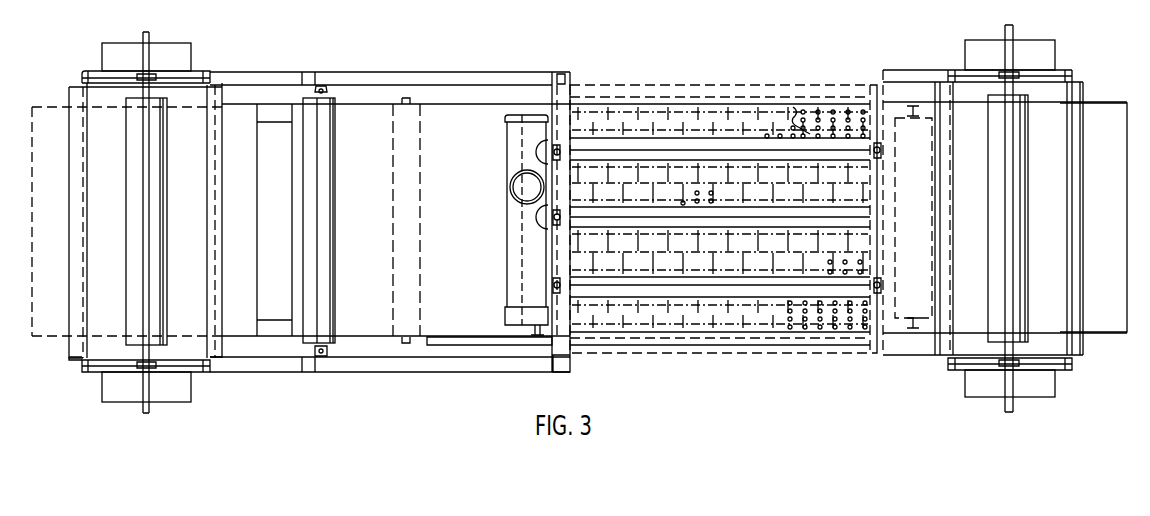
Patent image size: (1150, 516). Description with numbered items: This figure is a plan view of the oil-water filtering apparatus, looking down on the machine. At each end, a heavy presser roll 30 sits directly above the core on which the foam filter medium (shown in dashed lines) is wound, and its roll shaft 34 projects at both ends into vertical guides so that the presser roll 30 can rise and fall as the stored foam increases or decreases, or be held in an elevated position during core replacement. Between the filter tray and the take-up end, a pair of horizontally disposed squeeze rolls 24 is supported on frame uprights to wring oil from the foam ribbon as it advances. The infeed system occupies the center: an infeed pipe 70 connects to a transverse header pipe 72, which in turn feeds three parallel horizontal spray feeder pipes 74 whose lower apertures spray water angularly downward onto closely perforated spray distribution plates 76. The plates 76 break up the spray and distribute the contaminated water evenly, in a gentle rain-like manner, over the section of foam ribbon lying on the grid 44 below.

The squeeze rolls 24 is at (338, 198).
The presser roll 30 is at (136, 224).
The roll shaft 34 is at (150, 40).
The grid 44 is at (410, 290).
The infeed pipe 70 is at (519, 186).
The header pipe 72 is at (508, 245).
The spray feeder pipes 74 is at (641, 146).
The spray distribution plates 76 is at (818, 112).